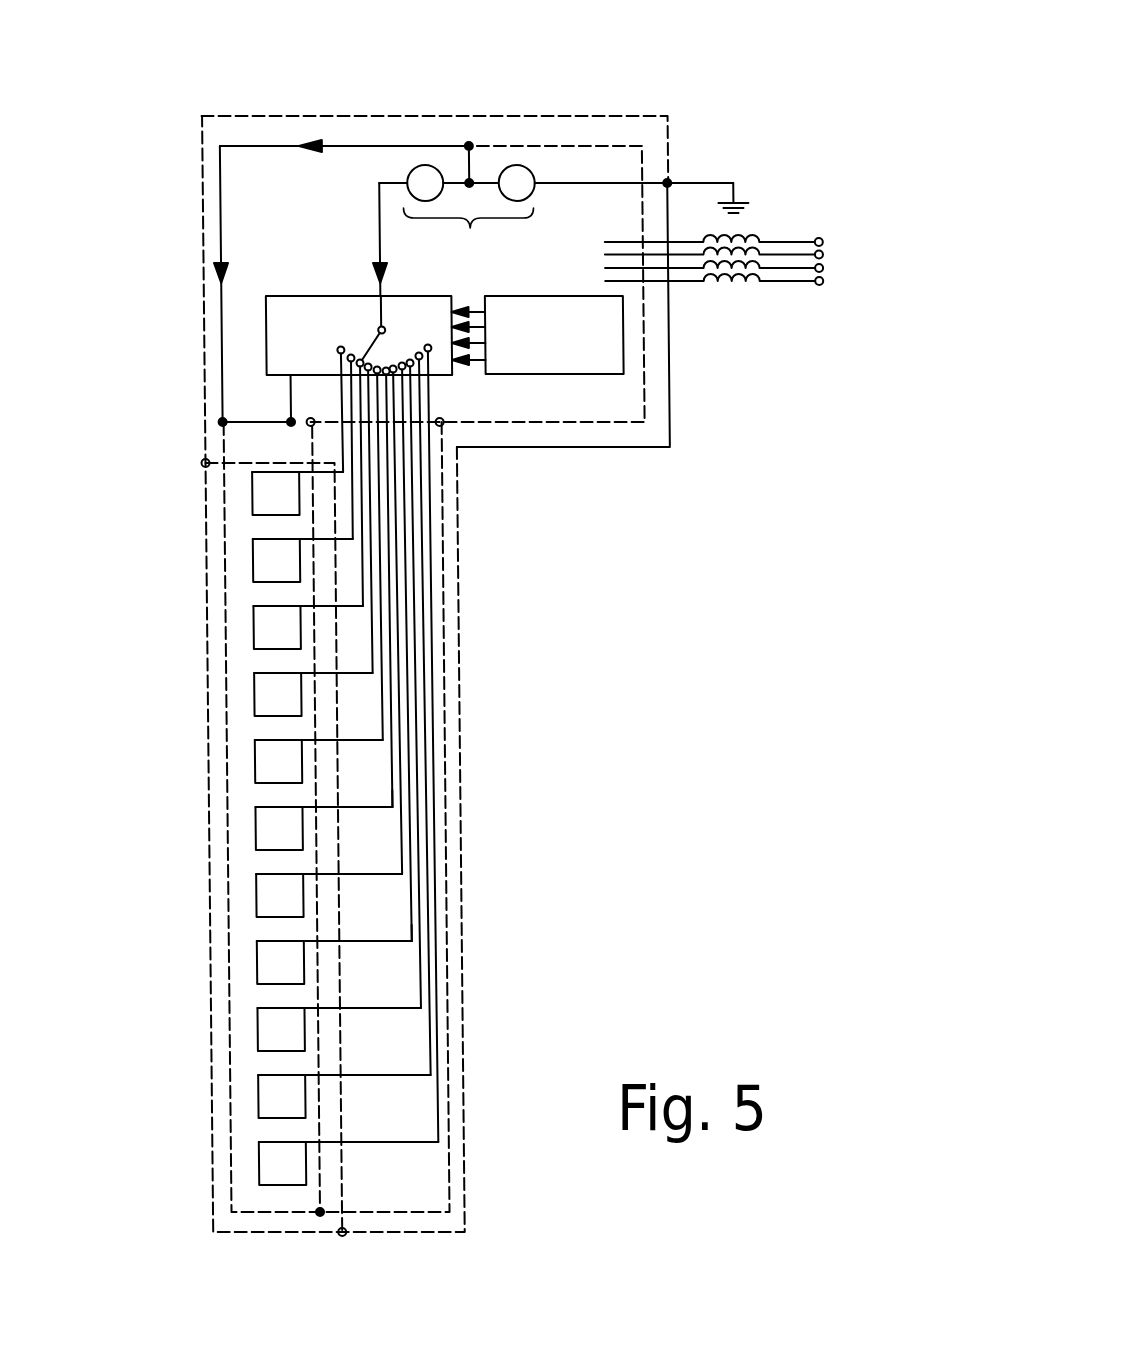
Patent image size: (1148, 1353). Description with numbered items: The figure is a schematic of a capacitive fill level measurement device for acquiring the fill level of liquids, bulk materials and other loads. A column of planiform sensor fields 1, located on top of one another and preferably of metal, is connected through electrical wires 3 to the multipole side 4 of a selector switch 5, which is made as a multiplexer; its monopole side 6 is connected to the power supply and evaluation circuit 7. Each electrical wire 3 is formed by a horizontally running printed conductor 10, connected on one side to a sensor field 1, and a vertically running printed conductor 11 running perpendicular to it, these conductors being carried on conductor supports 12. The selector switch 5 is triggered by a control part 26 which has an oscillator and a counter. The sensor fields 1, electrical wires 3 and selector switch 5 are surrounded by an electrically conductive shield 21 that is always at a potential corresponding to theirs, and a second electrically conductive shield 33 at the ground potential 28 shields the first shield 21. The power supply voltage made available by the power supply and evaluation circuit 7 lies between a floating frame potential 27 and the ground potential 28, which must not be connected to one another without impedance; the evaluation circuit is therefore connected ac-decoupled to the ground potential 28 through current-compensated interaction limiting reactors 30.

The sensor fields 1 is at (264, 509).
The electrical wires 3 is at (430, 390).
The multipole side 4 is at (292, 362).
The selector switch 5 is at (295, 344).
The monopole side 6 is at (362, 315).
The power supply and evaluation circuit 7 is at (469, 214).
The horizontally running printed conductors 10 is at (345, 808).
The vertically running printed conductors 11 is at (385, 792).
The conductor supports 12 is at (378, 1196).
The electrically conductive shield 21 is at (440, 627).
The control part 26 is at (540, 344).
The frame potential 27 is at (626, 421).
The ground potential 28 is at (738, 194).
The current-compensated interaction limiting reactors 30 is at (731, 302).
The second electrically conductive shield 33 is at (534, 114).